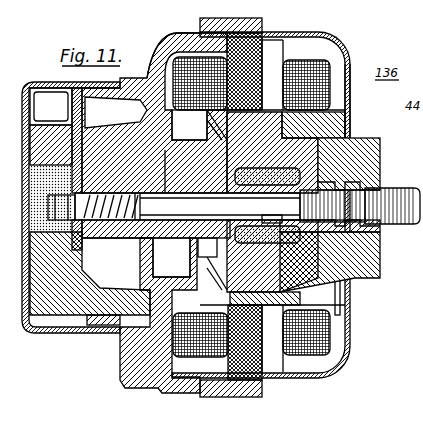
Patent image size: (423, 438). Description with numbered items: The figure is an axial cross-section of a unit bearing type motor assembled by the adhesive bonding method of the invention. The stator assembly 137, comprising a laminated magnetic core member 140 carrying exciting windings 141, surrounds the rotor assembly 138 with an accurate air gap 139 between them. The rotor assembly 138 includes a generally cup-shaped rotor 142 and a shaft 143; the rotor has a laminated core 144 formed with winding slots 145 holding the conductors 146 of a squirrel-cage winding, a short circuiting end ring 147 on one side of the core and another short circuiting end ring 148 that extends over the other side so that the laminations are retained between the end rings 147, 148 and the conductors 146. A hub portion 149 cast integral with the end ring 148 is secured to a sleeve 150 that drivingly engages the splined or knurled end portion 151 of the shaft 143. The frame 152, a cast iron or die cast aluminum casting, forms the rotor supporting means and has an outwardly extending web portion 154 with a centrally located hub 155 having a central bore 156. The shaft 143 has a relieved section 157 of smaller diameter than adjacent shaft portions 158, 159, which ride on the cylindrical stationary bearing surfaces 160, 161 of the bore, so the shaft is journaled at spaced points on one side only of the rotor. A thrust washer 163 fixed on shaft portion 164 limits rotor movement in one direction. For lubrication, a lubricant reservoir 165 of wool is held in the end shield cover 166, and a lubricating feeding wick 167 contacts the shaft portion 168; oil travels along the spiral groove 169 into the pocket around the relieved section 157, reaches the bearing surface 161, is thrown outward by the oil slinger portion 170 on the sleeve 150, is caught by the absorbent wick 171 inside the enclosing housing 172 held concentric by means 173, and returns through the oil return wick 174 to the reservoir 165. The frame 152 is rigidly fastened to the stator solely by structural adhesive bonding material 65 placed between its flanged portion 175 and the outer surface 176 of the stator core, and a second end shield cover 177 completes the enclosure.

The structural adhesive bonding material 65 is at (265, 387).
The stator assembly 137 is at (306, 33).
The rotor assembly 138 is at (362, 140).
The air gap 139 is at (335, 306).
The laminated magnetic core member 140 is at (268, 55).
The exciting windings 141 is at (334, 70).
The cup-shaped rotor 142 is at (383, 146).
The shaft 143 is at (398, 198).
The laminated core 144 is at (189, 125).
The winding slots 145 is at (245, 300).
The conductors 146 is at (285, 300).
The short circuiting end ring 147 is at (222, 292).
The short circuiting end ring 148 is at (292, 143).
The hub portion 149 is at (383, 160).
The sleeve 150 is at (376, 240).
The splined or knurled end portion 151 is at (376, 222).
The frame 152 is at (163, 40).
The web portion 154 is at (145, 130).
The hub 155 is at (143, 224).
The central bore 156 is at (120, 224).
The relieved section 157 is at (178, 238).
The shaft portion 158 is at (158, 204).
The shaft portion 159 is at (248, 204).
The cylindrical stationary bearing surface 160 is at (153, 192).
The cylindrical stationary bearing surface 161 is at (252, 205).
The thrust washer 163 is at (100, 318).
The shaft portion 164 is at (50, 198).
The lubricant reservoir 165 is at (82, 127).
The end shield cover 166 is at (35, 82).
The lubricating feeding wick 167 is at (72, 112).
The shaft portion 168 is at (95, 224).
The spiral groove 169 is at (128, 192).
The oil slinger portion 170 is at (272, 222).
The absorbent wick 171 is at (366, 276).
The enclosing housing 172 is at (208, 247).
The holding means 173 is at (205, 125).
The oil return wick 174 is at (58, 300).
The flanged portion 175 is at (231, 17).
The outer surface 176 is at (265, 31).
The second end shield cover 177 is at (348, 108).